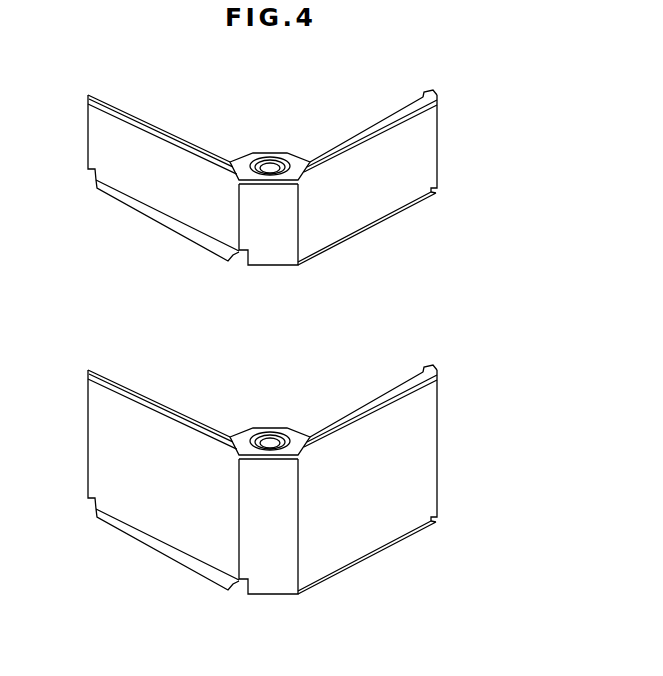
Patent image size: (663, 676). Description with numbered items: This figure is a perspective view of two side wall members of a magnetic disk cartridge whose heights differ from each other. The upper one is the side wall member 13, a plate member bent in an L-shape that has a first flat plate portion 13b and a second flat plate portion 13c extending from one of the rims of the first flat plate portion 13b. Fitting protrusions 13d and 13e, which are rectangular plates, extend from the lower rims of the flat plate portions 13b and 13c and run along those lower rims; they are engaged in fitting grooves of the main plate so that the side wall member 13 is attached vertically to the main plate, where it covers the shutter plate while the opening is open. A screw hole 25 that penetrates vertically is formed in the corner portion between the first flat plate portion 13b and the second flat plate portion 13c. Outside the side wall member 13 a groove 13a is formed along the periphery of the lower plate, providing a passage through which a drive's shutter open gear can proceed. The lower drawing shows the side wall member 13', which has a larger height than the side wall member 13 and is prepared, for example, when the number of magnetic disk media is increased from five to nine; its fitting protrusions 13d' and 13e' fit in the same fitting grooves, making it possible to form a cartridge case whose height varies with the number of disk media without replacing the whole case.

The side wall member 13 is at (308, 177).
The groove 13a is at (155, 215).
The first flat plate portion 13b is at (132, 170).
The second flat plate portion 13c is at (323, 232).
The fitting protrusion 13d is at (167, 242).
The fitting protrusion 13e is at (377, 231).
The screw hole 25 is at (268, 168).
The side wall member 13' is at (311, 479).
The fitting protrusion 13d' is at (167, 571).
The fitting protrusion 13e' is at (375, 558).